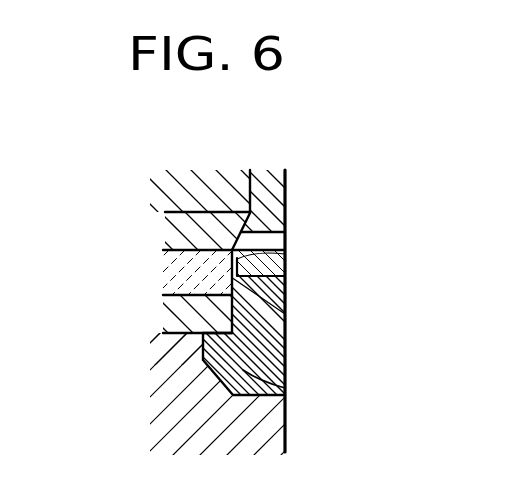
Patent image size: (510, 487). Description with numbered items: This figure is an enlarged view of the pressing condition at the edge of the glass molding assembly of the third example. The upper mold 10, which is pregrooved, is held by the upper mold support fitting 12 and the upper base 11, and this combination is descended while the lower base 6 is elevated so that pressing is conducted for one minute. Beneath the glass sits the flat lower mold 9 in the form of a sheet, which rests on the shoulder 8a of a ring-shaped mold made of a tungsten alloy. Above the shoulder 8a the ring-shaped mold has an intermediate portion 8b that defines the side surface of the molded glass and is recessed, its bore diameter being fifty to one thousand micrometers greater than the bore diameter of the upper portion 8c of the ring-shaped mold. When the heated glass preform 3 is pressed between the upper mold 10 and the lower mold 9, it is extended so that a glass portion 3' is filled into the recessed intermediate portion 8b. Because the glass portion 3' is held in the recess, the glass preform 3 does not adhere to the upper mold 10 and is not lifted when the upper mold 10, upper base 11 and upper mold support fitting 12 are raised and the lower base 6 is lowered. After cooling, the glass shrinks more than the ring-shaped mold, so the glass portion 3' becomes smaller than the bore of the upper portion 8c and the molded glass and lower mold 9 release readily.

The upper base 11 is at (184, 191).
The upper mold 10 is at (183, 236).
The upper mold support fitting 12 is at (287, 192).
The glass preform 3 is at (194, 291).
The lower mold 9 is at (167, 357).
The upper portion of the ring-shaped mold 8c is at (287, 258).
The intermediate portion of the ring-shaped mold 8b is at (287, 272).
The glass portion 3' is at (240, 322).
The shoulder of the ring-shaped mold 8a is at (287, 387).
The lower base 6 is at (212, 438).